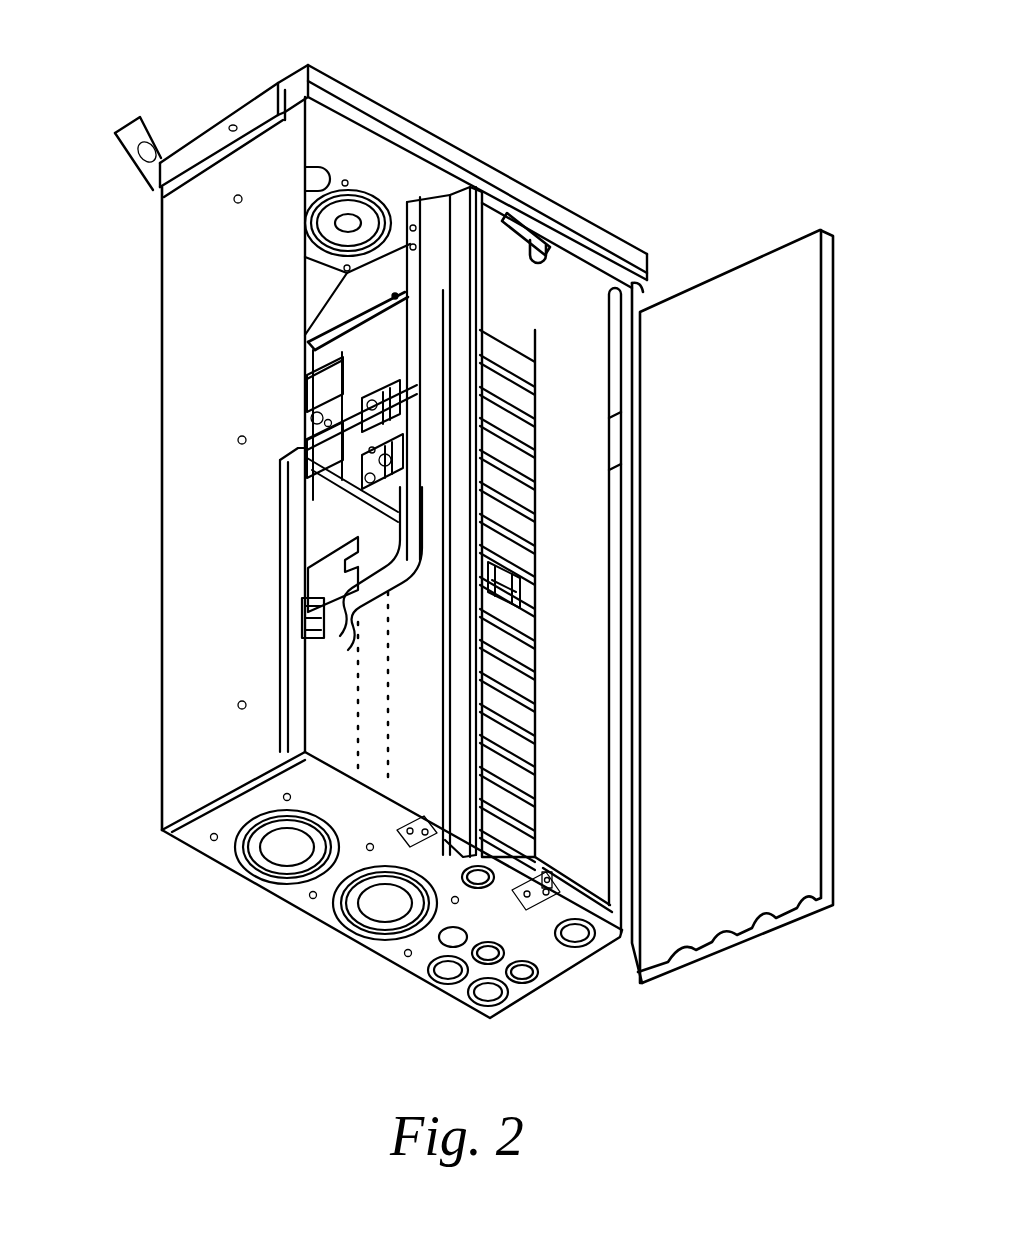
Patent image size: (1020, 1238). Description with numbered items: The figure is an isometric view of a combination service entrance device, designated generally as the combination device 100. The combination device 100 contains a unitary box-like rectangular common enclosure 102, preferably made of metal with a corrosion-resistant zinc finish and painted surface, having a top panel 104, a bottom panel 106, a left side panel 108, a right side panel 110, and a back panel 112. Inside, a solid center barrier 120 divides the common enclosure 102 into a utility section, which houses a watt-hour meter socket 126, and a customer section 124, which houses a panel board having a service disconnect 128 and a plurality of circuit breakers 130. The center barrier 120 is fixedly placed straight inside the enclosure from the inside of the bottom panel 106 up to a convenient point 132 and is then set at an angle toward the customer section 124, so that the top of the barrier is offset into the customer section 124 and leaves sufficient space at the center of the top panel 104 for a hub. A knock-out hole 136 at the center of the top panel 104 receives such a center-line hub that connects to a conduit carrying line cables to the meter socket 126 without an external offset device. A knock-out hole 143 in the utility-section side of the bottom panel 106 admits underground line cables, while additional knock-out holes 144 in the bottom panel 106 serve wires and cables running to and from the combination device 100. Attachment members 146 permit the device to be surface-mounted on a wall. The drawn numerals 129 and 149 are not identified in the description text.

The combination device 100 is at (453, 104).
The common enclosure 102 is at (160, 445).
The top panel 104 is at (255, 103).
The bottom panel 106 is at (193, 832).
The left side panel 108 is at (197, 640).
The right side panel 110 is at (638, 297).
The back panel 112 is at (587, 830).
The center barrier 120 is at (392, 333).
The customer section 124 is at (594, 370).
The watt-hour meter socket 126 is at (303, 385).
The service disconnect 128 is at (532, 590).
The terminal block 129 is at (360, 713).
The circuit breakers 130 is at (530, 492).
The point 132 is at (402, 300).
The knock-out hole 136 is at (388, 183).
The knock-out hole 143 is at (285, 857).
The knock-out holes 144 is at (372, 910).
The attachment members 146 is at (128, 133).
The door 149 is at (834, 397).